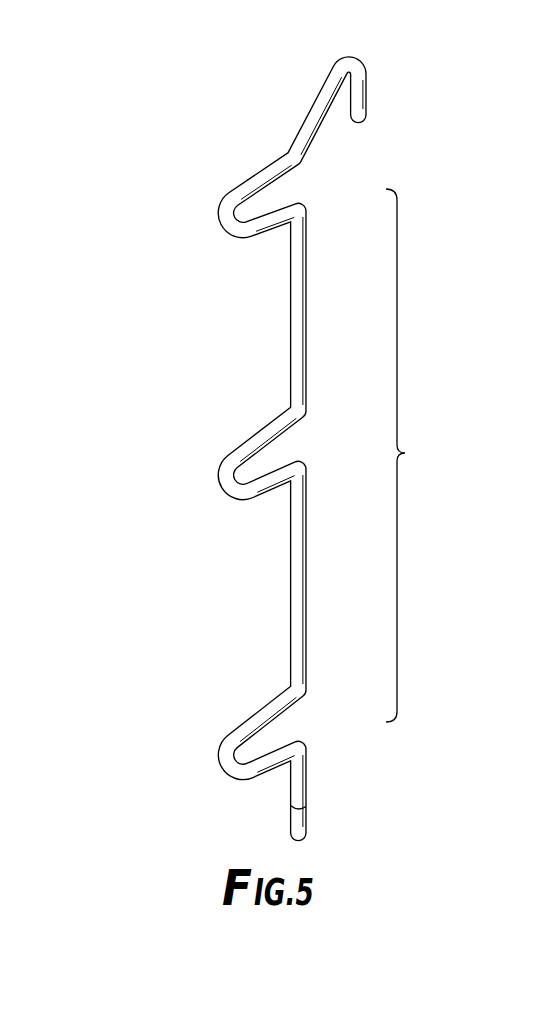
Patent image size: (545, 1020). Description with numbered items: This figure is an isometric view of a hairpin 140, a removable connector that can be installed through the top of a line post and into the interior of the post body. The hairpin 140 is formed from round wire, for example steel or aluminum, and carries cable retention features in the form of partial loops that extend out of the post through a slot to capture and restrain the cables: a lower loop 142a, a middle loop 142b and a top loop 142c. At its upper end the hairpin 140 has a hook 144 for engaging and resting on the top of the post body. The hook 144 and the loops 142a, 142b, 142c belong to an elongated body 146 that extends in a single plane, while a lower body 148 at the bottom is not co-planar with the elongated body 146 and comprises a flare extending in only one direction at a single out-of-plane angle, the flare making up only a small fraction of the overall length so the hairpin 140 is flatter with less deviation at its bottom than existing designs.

The hairpin 140 is at (240, 100).
The lower loop 142a is at (218, 752).
The middle loop 142b is at (218, 478).
The top loop 142c is at (218, 218).
The hook 144 is at (360, 56).
The elongated body 146 is at (405, 453).
The lower body 148 is at (307, 823).